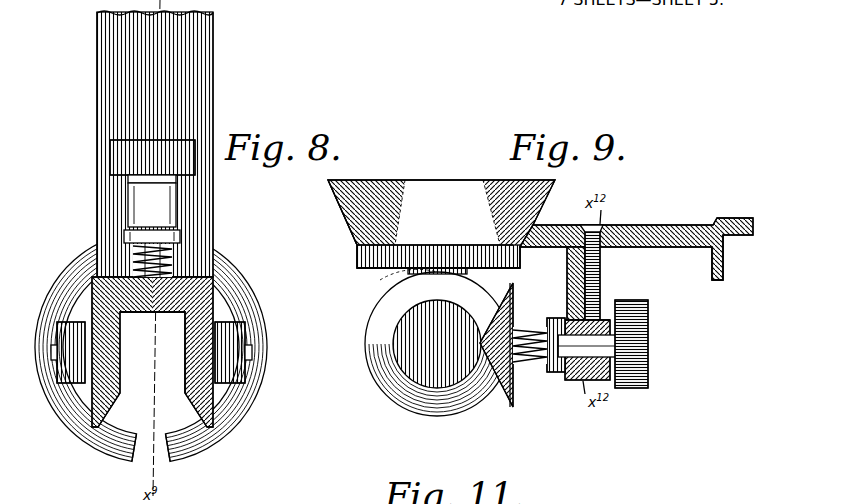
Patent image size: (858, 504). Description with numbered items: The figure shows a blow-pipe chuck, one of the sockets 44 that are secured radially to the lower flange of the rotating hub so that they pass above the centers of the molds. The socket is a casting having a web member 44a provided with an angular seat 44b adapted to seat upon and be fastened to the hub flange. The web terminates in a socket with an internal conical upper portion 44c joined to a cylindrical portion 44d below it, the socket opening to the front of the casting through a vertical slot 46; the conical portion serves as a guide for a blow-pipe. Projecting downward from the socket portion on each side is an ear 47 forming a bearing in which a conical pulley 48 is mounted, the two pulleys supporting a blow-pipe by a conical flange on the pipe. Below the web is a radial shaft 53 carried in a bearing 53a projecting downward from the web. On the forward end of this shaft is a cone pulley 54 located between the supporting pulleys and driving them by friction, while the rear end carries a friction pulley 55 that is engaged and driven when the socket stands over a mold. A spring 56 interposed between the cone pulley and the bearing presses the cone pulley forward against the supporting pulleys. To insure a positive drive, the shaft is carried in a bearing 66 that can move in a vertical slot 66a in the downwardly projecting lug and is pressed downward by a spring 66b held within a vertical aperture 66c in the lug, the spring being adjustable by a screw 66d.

In FIG. 8, the socket 44 is at (220, 262).
In FIG. 9, the socket 44 is at (441, 218).
In FIG. 8, the web member 44a is at (105, 117).
In FIG. 9, the web member 44a is at (655, 225).
In FIG. 9, the angular seat 44b is at (725, 240).
In FIG. 9, the internal conical upper portion 44c is at (435, 225).
In FIG. 8, the cylindrical portion 44d is at (107, 425).
In FIG. 9, the cylindrical portion 44d is at (410, 270).
In FIG. 8, the vertical slot 46 is at (167, 452).
In FIG. 9, the vertical slot 46 is at (355, 226).
In FIG. 8, the ear 47 is at (42, 383).
In FIG. 9, the ear 47 is at (393, 283).
In FIG. 8, the conical pulley 48 is at (183, 363).
In FIG. 9, the conical pulley 48 is at (372, 360).
In FIG. 8, the radial shaft 53 is at (92, 244).
In FIG. 9, the radial shaft 53 is at (582, 352).
In FIG. 8, the bearing 53a is at (157, 203).
In FIG. 9, the bearing 53a is at (574, 389).
In FIG. 8, the cone pulley 54 is at (148, 306).
In FIG. 9, the cone pulley 54 is at (500, 396).
In FIG. 8, the friction pulley 55 is at (117, 159).
In FIG. 9, the friction pulley 55 is at (640, 340).
In FIG. 8, the spring 56 is at (172, 248).
In FIG. 9, the spring 56 is at (522, 330).
In FIG. 8, the bearing 66 is at (143, 230).
In FIG. 9, the bearing 66 is at (607, 323).
In FIG. 9, the vertical slot 66a is at (603, 320).
In FIG. 9, the spring 66b is at (600, 278).
In FIG. 9, the vertical aperture 66c is at (566, 275).
In FIG. 9, the screw 66d is at (598, 232).